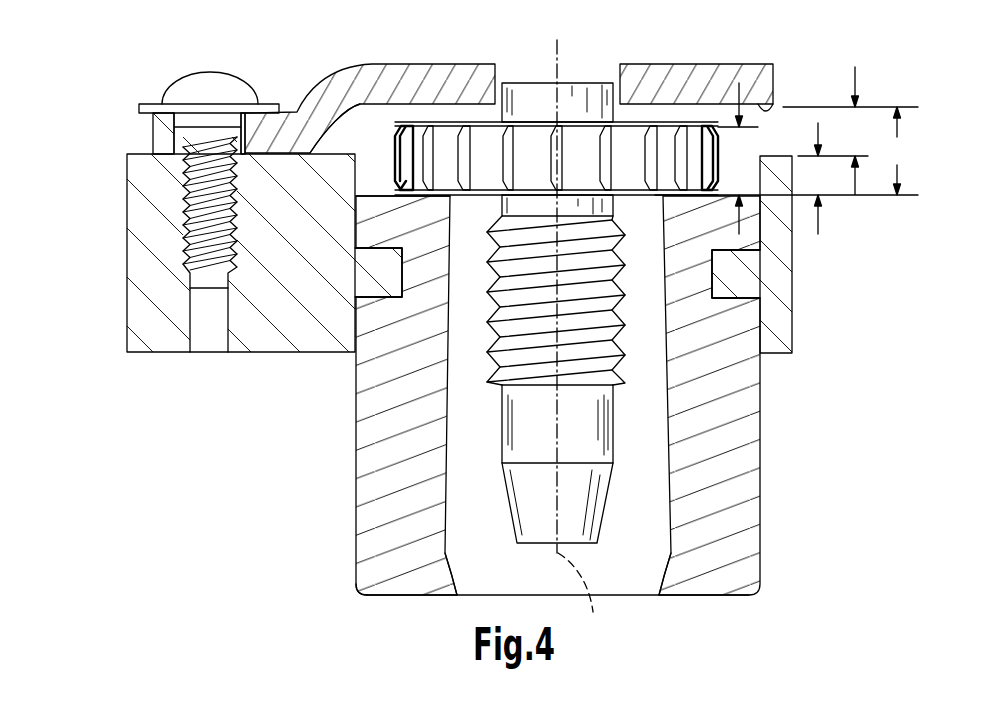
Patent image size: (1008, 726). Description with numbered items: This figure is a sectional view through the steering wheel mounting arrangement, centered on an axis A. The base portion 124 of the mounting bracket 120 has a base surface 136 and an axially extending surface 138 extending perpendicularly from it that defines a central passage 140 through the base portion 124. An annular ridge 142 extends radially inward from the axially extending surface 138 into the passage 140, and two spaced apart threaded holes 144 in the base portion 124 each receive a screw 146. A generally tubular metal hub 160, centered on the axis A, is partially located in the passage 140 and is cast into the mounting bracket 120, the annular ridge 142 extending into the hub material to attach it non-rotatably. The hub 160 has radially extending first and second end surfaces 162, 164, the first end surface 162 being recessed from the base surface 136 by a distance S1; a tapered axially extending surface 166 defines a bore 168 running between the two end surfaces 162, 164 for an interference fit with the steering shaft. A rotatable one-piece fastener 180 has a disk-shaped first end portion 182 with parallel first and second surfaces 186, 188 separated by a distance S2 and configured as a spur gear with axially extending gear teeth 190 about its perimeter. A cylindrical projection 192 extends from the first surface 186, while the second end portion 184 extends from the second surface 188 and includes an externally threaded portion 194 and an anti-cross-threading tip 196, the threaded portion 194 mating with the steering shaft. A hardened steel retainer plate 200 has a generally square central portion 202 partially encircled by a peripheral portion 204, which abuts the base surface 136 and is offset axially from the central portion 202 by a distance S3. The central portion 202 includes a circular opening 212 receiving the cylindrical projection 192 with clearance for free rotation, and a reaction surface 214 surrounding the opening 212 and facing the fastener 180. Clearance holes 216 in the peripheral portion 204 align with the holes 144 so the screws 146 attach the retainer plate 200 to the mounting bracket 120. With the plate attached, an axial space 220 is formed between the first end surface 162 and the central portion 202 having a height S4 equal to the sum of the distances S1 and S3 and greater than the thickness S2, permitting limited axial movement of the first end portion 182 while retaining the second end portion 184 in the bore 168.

The mounting bracket 120 is at (122, 323).
The base portion 124 is at (147, 217).
The base surface 136 is at (347, 154).
The axially extending surface 138 is at (362, 154).
The central passage 140 is at (370, 172).
The annular ridge 142 is at (733, 290).
The holes 144 is at (226, 331).
The screw 146 is at (170, 82).
The hub 160 is at (771, 477).
The first end surface 162 is at (360, 194).
The second end surface 164 is at (398, 597).
The axially extending surface 166 is at (457, 596).
The bore 168 is at (660, 562).
The fastener 180 is at (494, 461).
The first end portion 182 is at (668, 135).
The second end portion 184 is at (502, 353).
The first surface 186 is at (662, 145).
The second surface 188 is at (620, 198).
The gear teeth 190 is at (428, 158).
The cylindrical projection 192 is at (585, 82).
The externally threaded portion 194 is at (622, 353).
The anti-cross-threading tip 196 is at (590, 498).
The retainer plate 200 is at (297, 89).
The central portion 202 is at (773, 78).
The peripheral portion 204 is at (162, 132).
The circular opening 212 is at (542, 83).
The reaction surface 214 is at (785, 107).
The clearance holes 216 is at (173, 123).
The axial space 220 is at (380, 157).
The axis A is at (579, 341).
The distance S1 is at (786, 195).
The distance S2 is at (738, 158).
The distance S3 is at (833, 139).
The height S4 is at (899, 151).